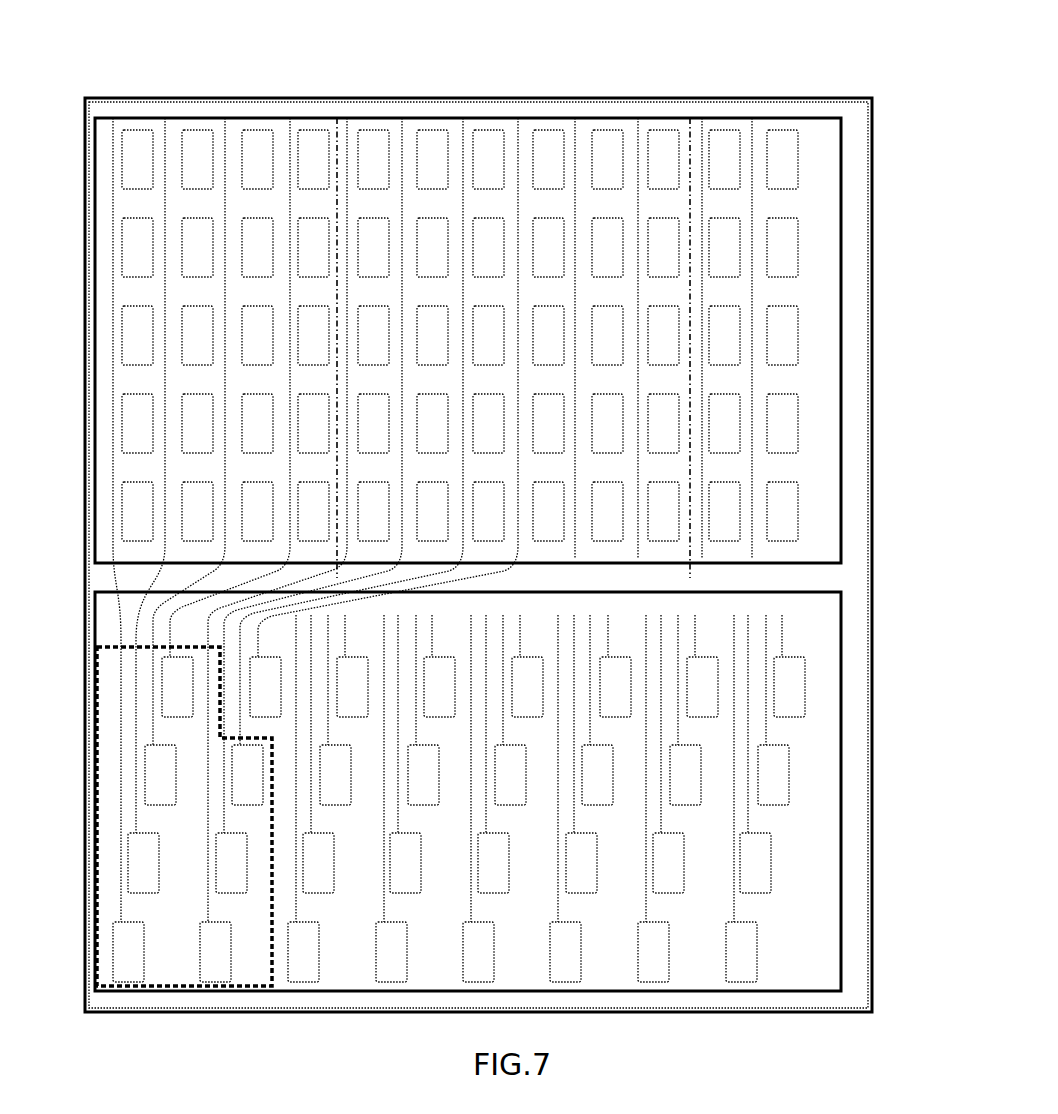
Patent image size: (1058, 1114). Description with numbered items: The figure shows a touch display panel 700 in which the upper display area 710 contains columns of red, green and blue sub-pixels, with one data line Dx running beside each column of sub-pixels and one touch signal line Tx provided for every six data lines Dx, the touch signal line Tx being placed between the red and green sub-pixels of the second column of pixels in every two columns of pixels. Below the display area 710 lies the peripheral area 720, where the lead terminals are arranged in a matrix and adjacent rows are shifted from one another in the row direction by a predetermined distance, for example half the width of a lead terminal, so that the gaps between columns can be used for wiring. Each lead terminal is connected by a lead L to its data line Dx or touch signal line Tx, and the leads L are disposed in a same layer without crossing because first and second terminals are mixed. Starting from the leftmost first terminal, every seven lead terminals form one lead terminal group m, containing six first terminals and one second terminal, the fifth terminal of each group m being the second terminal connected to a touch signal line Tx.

The touch display panel 700 is at (772, 98).
The display area 710 is at (528, 468).
The peripheral area 720 is at (502, 760).
The data line Dx is at (165, 118).
The touch signal line Tx is at (338, 118).
The lead L is at (786, 635).
The lead terminal group m is at (95, 767).